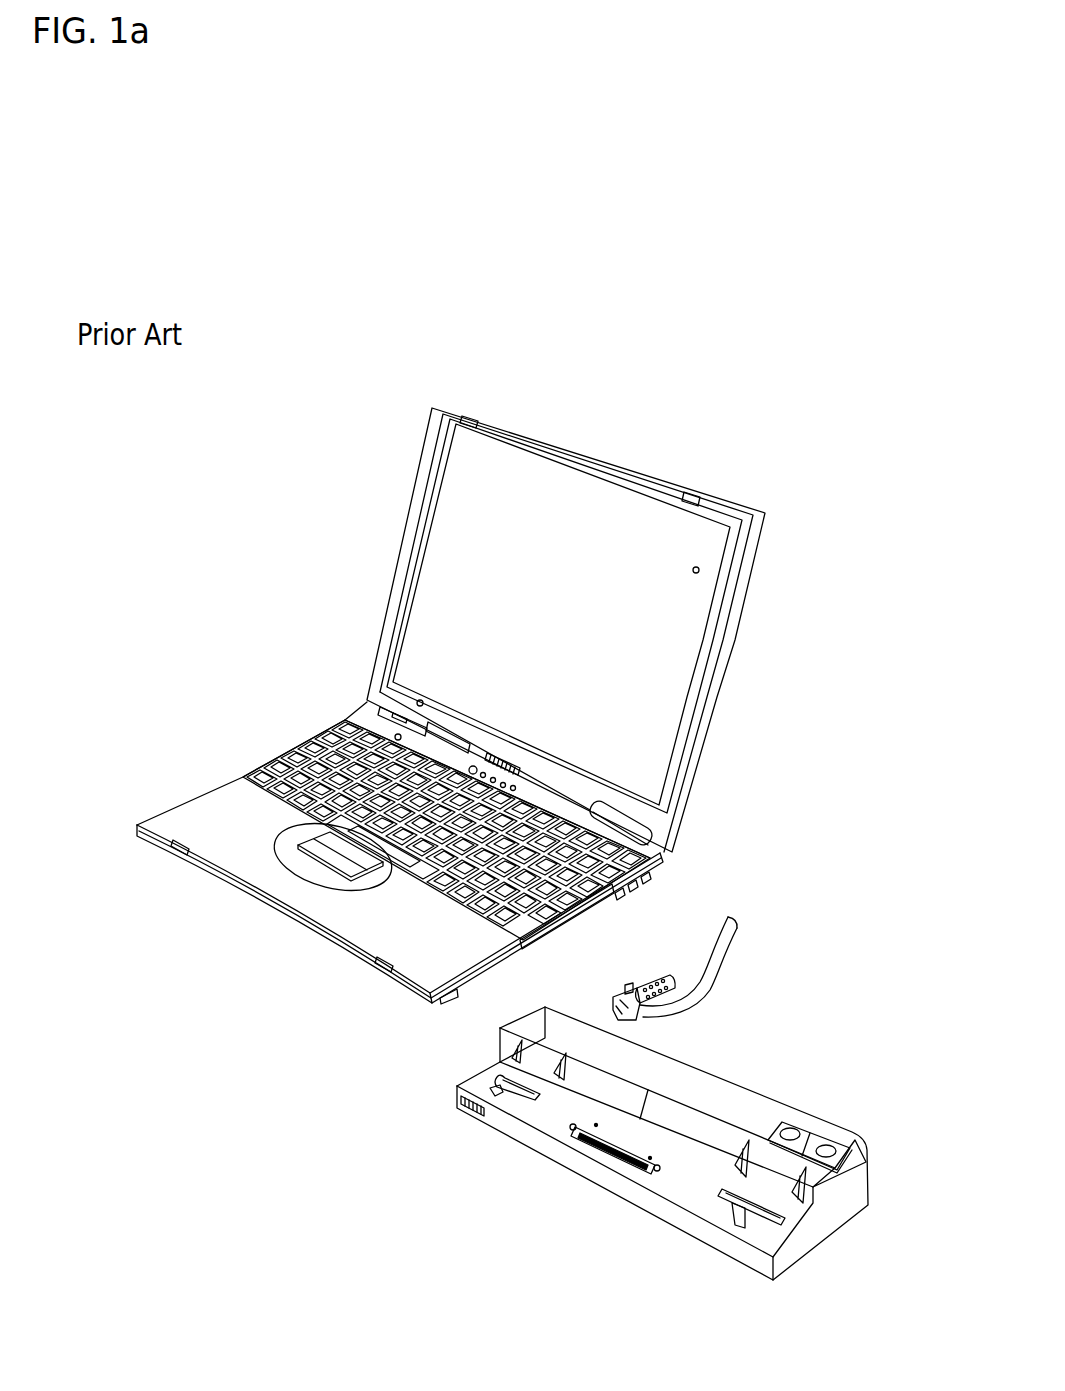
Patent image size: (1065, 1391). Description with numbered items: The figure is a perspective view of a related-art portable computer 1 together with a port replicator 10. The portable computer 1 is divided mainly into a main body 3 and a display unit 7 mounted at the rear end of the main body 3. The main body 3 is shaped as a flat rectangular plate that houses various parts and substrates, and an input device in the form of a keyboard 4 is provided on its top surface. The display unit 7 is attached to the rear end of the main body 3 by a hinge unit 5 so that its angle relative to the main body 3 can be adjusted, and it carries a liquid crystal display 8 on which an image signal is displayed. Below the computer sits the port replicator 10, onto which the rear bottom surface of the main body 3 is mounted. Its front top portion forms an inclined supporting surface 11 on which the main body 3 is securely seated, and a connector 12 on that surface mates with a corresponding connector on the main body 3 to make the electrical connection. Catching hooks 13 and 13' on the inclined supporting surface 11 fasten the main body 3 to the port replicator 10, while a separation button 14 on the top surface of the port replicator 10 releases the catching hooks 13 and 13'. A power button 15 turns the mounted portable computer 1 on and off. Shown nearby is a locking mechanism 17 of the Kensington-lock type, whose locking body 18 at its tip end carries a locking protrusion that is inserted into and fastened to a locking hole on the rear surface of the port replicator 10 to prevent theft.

The portable computer 1 is at (353, 523).
The main body 3 is at (190, 817).
The keyboard 4 is at (347, 764).
The hinge unit 5 is at (671, 838).
The display unit 7 is at (637, 460).
The liquid crystal display 8 is at (699, 571).
The port replicator 10 is at (745, 1042).
The inclined supporting surface 11 is at (681, 1172).
The connector 12 is at (592, 1142).
The catching hook 13 is at (755, 1254).
The catching hook 13' is at (502, 1140).
The separation button 14 is at (790, 1129).
The power button 15 is at (828, 1146).
The locking mechanism 17 is at (745, 968).
The locking body 18 is at (655, 972).